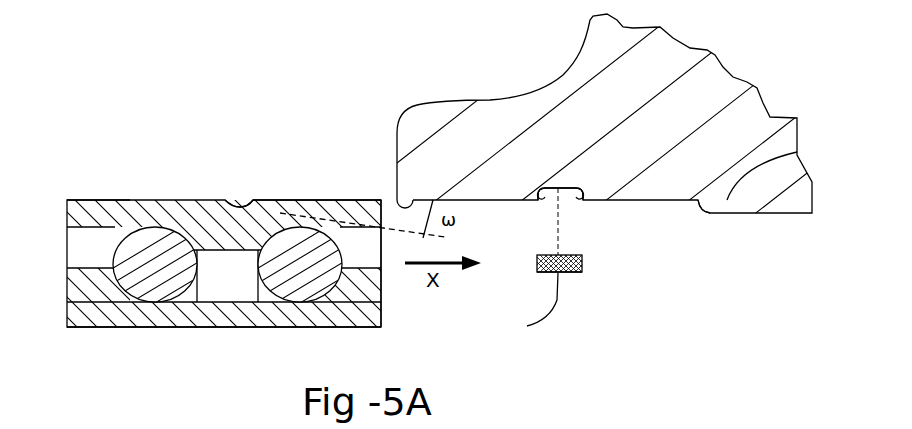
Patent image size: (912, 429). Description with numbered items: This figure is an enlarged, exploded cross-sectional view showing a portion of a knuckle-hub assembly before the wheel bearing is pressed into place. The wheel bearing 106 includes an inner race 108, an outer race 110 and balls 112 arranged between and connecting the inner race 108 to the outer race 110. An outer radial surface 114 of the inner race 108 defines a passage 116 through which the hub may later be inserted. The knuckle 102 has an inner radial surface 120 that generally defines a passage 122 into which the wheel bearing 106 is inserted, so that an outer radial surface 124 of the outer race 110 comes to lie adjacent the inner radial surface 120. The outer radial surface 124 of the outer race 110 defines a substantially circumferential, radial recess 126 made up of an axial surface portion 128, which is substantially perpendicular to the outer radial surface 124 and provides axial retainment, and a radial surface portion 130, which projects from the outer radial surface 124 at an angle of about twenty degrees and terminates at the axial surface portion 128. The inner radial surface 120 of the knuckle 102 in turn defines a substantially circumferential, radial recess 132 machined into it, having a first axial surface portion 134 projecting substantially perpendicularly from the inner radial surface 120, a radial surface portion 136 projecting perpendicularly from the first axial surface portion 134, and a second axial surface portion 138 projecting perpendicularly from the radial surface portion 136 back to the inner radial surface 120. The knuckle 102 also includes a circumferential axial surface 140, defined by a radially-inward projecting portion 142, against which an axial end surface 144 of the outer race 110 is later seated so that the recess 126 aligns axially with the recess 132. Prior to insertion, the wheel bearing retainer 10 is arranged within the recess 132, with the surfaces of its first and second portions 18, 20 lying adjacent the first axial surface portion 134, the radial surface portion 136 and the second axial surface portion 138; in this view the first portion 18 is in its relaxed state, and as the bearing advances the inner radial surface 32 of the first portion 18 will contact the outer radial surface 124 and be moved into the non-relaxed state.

The knuckle 102 is at (513, 64).
The wheel bearing 106 is at (124, 137).
The inner race 108 is at (75, 308).
The outer race 110 is at (74, 212).
The balls 112 is at (138, 262).
The outer radial surface of the inner race 114 is at (152, 327).
The passage 116 is at (92, 352).
The inner radial surface of the knuckle 120 is at (396, 205).
The passage 122 is at (447, 337).
The outer radial surface of the outer race 124 is at (90, 198).
The radial recess 126 is at (231, 178).
The axial surface portion 128 is at (252, 200).
The radial surface portion 130 is at (240, 207).
The radial recess 132 is at (571, 209).
The first axial surface portion 134 is at (538, 203).
The radial surface portion 136 is at (548, 205).
The second axial surface portion 138 is at (582, 203).
The axial surface 140 is at (698, 210).
The radially-inward projecting portion 142 is at (797, 152).
The axial end surface of the outer race 144 is at (382, 212).
The wheel bearing retainer 10 is at (586, 296).
The first portion 18 is at (535, 282).
The second portion 20 is at (593, 260).
The inner radial surface 32 is at (527, 326).